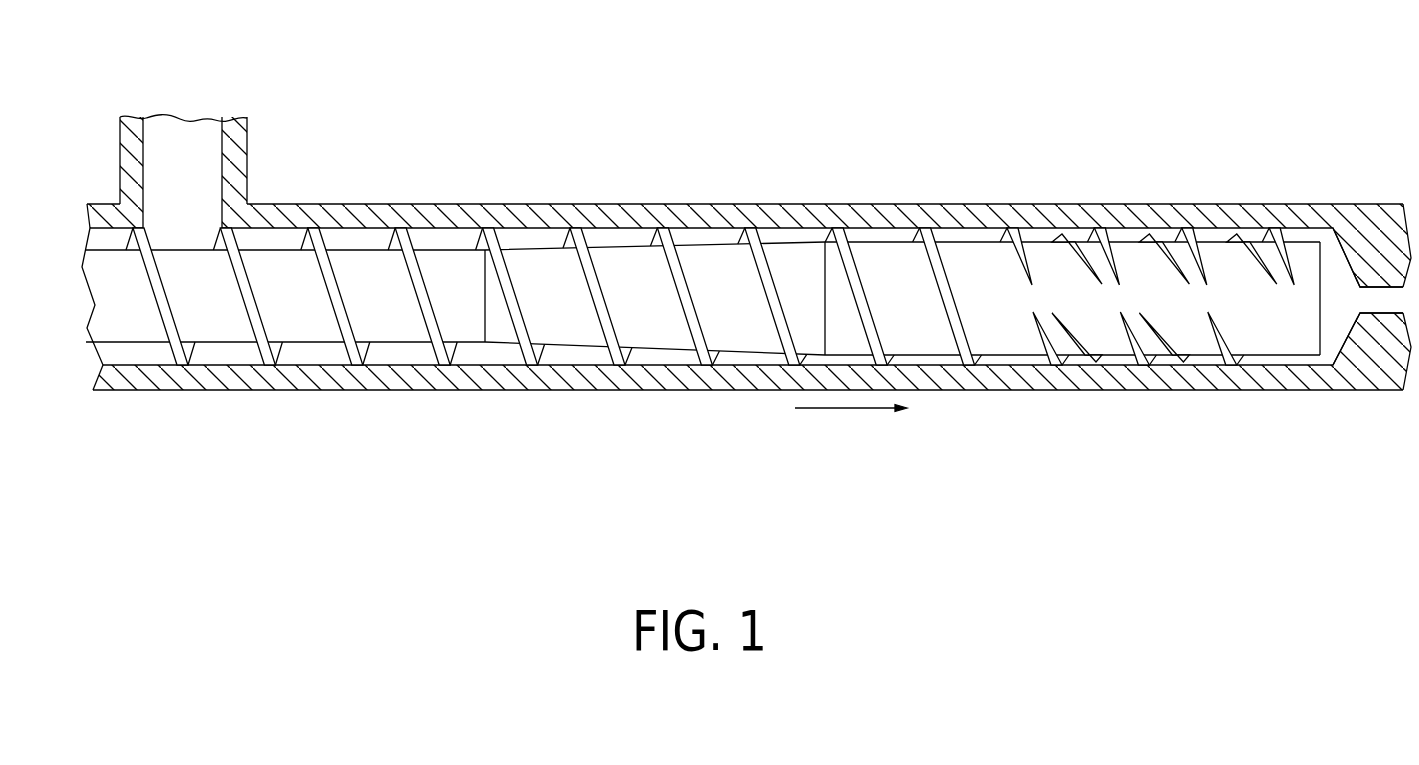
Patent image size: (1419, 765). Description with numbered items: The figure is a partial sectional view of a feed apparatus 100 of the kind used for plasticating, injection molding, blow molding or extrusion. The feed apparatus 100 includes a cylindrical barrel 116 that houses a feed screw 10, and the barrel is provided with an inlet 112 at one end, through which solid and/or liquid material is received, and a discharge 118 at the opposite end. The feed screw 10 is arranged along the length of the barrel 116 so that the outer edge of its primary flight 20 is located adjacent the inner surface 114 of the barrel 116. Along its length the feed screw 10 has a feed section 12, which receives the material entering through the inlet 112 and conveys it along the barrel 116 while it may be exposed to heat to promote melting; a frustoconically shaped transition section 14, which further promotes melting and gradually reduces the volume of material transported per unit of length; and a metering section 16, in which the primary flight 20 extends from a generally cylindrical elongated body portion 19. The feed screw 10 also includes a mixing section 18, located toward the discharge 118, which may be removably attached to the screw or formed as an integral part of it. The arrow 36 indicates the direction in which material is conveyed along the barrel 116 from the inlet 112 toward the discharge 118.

The feed apparatus 100 is at (746, 269).
The feed screw 10 is at (703, 300).
The feed section 12 is at (317, 368).
The transition section 14 is at (663, 368).
The metering section 16 is at (1217, 415).
The mixing section 18 is at (1140, 297).
The body portion 19 is at (1130, 240).
The primary flight 20 is at (1055, 363).
The direction of material flow 36 is at (851, 429).
The inlet 112 is at (183, 137).
The inner surface 114 is at (368, 236).
The barrel 116 is at (576, 193).
The discharge 118 is at (1382, 300).